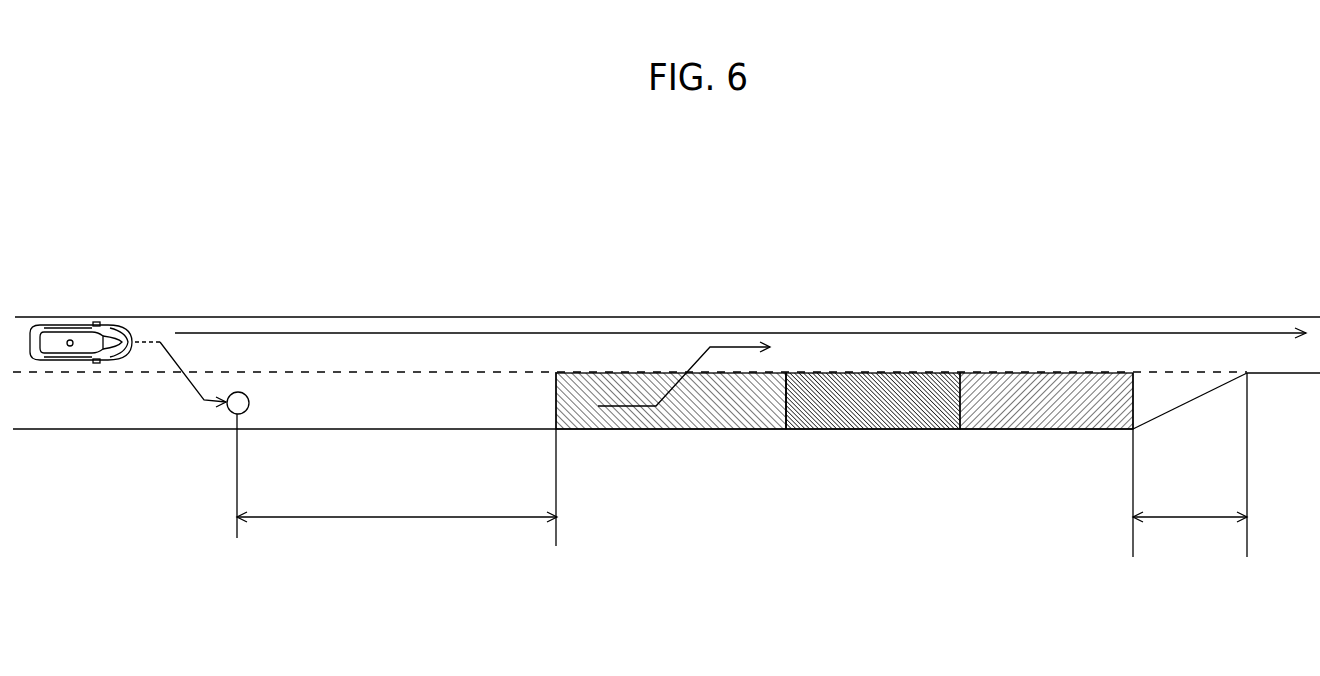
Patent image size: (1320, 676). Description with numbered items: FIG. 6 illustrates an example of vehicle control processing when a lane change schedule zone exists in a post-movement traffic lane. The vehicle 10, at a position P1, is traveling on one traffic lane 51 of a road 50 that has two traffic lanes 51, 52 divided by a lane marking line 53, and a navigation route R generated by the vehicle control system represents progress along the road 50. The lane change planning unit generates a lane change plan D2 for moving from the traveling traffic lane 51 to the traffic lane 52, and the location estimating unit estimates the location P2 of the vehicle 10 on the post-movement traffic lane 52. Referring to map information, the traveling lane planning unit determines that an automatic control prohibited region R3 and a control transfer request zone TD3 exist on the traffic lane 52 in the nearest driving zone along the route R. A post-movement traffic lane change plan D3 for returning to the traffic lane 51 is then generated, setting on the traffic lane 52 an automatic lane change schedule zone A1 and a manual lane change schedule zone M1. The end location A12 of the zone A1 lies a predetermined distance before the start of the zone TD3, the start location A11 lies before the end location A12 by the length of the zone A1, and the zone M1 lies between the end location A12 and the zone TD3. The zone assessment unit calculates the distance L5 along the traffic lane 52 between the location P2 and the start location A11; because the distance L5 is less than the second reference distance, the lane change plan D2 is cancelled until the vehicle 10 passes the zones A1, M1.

The vehicle 10 is at (50, 325).
The vehicle position P1 is at (70, 340).
The lane change plan D2 is at (150, 342).
The road 50 is at (349, 315).
The traffic lane 51 is at (358, 366).
The traffic lane 52 is at (358, 416).
The lane marking line 53 is at (400, 372).
The start location of automatic lane change schedule zone A11 is at (556, 372).
The navigation route R is at (795, 333).
The post-movement traffic lane change plan D3 is at (614, 410).
The automatic lane change schedule zone A1 is at (700, 410).
The end location of automatic lane change schedule zone A12 is at (783, 430).
The manual lane change schedule zone M1 is at (866, 410).
The control transfer request zone TD3 is at (1067, 407).
The location of the vehicle on the post-movement traffic lane P2 is at (259, 405).
The distance L5 is at (397, 486).
The automatic control prohibited region R3 is at (1226, 465).